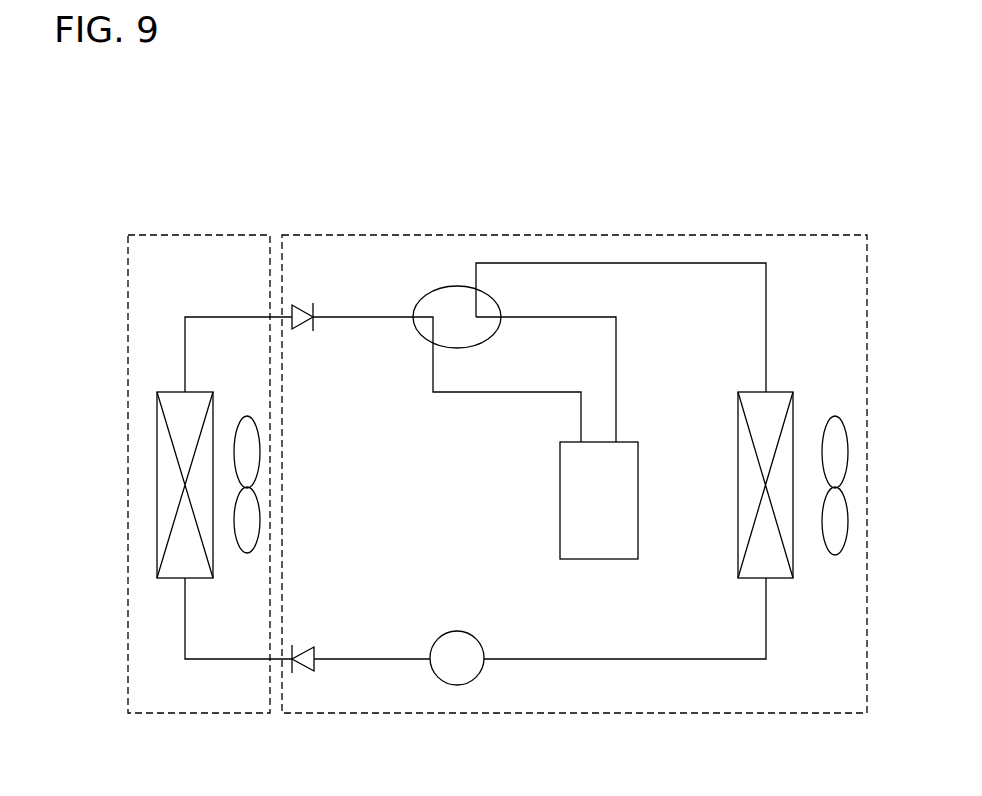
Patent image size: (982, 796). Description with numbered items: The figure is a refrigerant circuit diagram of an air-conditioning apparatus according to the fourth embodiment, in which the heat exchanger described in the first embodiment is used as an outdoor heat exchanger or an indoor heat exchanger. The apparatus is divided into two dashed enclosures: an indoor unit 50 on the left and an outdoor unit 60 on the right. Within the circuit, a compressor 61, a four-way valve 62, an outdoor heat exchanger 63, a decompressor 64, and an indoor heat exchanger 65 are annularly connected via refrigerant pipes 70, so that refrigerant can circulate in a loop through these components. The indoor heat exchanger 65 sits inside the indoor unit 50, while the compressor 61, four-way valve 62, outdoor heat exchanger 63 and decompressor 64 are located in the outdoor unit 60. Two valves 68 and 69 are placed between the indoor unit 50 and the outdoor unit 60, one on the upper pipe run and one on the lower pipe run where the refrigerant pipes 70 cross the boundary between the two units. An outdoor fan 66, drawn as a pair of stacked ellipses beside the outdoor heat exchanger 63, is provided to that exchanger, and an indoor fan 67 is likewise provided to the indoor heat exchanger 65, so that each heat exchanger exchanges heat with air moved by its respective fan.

The indoor unit 50 is at (209, 234).
The outdoor unit 60 is at (660, 234).
The compressor 61 is at (598, 559).
The four-way valve 62 is at (452, 286).
The outdoor heat exchanger 63 is at (780, 392).
The decompressor 64 is at (457, 685).
The indoor heat exchanger 65 is at (157, 466).
The outdoor fan 66 is at (835, 555).
The indoor fan 67 is at (247, 553).
The valve 68 is at (295, 305).
The valve 69 is at (314, 668).
The refrigerant pipes 70 is at (553, 263).